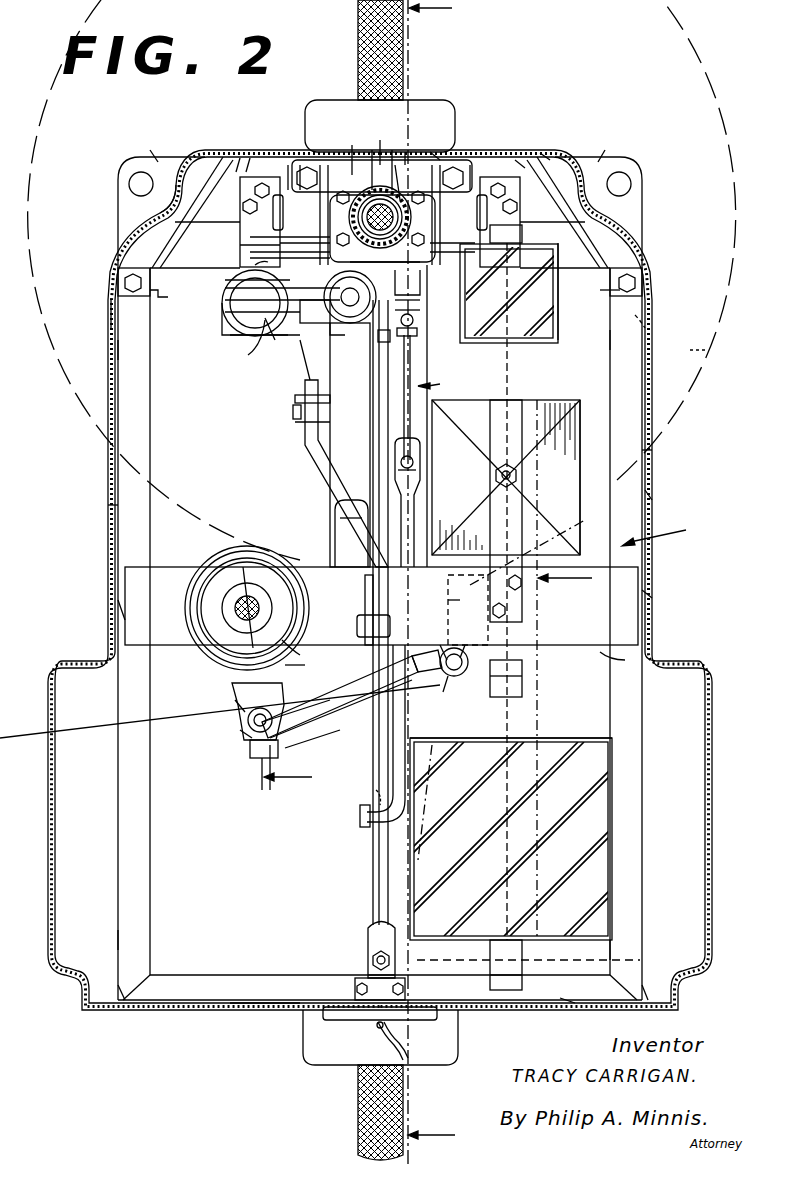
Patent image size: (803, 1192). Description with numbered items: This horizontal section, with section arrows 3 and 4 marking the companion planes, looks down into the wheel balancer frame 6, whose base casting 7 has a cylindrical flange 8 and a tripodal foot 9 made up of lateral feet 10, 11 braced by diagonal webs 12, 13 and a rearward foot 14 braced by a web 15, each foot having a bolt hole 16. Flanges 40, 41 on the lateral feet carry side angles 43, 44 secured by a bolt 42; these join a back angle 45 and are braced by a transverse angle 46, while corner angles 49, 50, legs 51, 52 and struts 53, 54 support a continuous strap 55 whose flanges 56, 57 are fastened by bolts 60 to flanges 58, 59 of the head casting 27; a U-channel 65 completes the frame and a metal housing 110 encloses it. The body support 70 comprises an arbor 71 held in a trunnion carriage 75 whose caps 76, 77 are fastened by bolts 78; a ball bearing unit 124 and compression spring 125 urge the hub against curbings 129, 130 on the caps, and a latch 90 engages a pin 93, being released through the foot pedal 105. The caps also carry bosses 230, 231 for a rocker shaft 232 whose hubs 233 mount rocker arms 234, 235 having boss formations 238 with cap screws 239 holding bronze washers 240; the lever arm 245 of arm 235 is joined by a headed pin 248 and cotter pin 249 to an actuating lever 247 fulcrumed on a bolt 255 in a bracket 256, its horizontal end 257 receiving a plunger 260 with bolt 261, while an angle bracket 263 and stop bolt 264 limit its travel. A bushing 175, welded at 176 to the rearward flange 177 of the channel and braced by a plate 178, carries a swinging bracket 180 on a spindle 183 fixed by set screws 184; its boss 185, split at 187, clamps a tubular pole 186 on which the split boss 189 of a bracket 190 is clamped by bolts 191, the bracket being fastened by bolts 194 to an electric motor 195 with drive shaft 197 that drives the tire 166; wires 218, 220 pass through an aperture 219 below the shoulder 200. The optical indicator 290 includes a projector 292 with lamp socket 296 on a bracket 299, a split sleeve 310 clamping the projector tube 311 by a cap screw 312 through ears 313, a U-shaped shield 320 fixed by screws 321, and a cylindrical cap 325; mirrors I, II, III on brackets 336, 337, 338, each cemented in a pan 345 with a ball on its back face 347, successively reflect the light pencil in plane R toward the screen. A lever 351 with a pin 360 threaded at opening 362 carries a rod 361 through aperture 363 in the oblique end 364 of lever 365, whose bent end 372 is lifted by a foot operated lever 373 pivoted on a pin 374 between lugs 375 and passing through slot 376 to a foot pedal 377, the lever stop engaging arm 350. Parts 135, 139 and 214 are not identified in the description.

The section line 3 is at (508, 857).
The section line 4 is at (365, 395).
The frame 6 is at (661, 531).
The base casting 7 is at (172, 170).
The cylindrical flange 8 is at (406, 160).
The tripodal foot 9 is at (375, 263).
The foot 10 is at (520, 162).
The foot 11 is at (249, 160).
The diagonal web 12 is at (546, 158).
The diagonal web 13 is at (238, 160).
The foot 14 is at (335, 433).
The diagonal web 15 is at (373, 426).
The hole 16 is at (140, 188).
The head casting 27 is at (445, 162).
The rearwardly extending flange 40 is at (607, 290).
The rearwardly extending flange 41 is at (162, 294).
The bolt 42 is at (120, 280).
The angle 43 is at (628, 348).
The angle 44 is at (130, 348).
The back angle 45 is at (265, 1008).
The transverse angle 46 is at (530, 680).
The upstanding angle 49 is at (644, 988).
The upstanding angle 50 is at (122, 995).
The leg 51 is at (652, 604).
The leg 52 is at (123, 613).
The vertical strut 53 is at (652, 322).
The vertical strut 54 is at (108, 312).
The strap 55 is at (644, 465).
The flange 56 is at (480, 168).
The flange 57 is at (287, 166).
The laterally extending flange 58 is at (466, 170).
The laterally extending flange 59 is at (300, 165).
The bolts 60 is at (307, 168).
The transverse U-channel 65 is at (381, 606).
The adjustable body support 70 is at (428, 231).
The arbor 71 is at (366, 217).
The trunnion carriage 75 is at (419, 186).
The cap 76 is at (419, 186).
The cap 77 is at (347, 184).
The bolts 78 is at (334, 229).
The latch 90 is at (373, 362).
The pin 93 is at (391, 339).
The foot pedal 105 is at (360, 18).
The housing 110 is at (650, 500).
The ball bearing unit 124 is at (379, 170).
The compression spring 125 is at (398, 170).
The curbing 129 is at (381, 160).
The curbing 130 is at (353, 160).
The support post 135 is at (336, 215).
The support post 139 is at (439, 215).
The tire 166 is at (705, 352).
The bushing 175 is at (462, 652).
The weld 176 is at (443, 652).
The rearward flange 177 is at (620, 656).
The brace plate 178 is at (448, 600).
The swinging bracket 180 is at (366, 700).
The spindle 183 is at (454, 662).
The set screws 184 is at (443, 680).
The vertical boss 185 is at (240, 708).
The tubular pole 186 is at (246, 727).
The split 187 is at (248, 721).
The split boss 189 is at (290, 742).
The bracket 190 is at (255, 740).
The bolts 191 is at (300, 713).
The bolts 194 is at (258, 708).
The electric motor 195 is at (247, 608).
The drive shaft 197 is at (236, 605).
The shoulder 200 is at (262, 752).
The spring 214 is at (365, 1028).
The wire 218 is at (296, 650).
The aperture 219 is at (290, 700).
The wire 220 is at (309, 663).
The boss 230 is at (424, 282).
The boss 231 is at (305, 237).
The rocker shaft 232 is at (385, 255).
The hub portion 233 is at (300, 250).
The rocker arm 234 is at (458, 238).
The rocker arm 235 is at (290, 236).
The boss formation 238 is at (273, 222).
The cap screw 239 is at (478, 222).
The bronze washer 240 is at (273, 210).
The lever arm 245 is at (302, 350).
The actuating lever 247 is at (305, 438).
The headed pin 248 is at (281, 411).
The cotter pin 249 is at (295, 422).
The bolt 255 is at (390, 626).
The upstanding bracket 256 is at (367, 597).
The end 257 is at (372, 938).
The plunger 260 is at (373, 962).
The bolt 261 is at (368, 975).
The angle bracket 263 is at (340, 542).
The stop bolt 264 is at (340, 520).
The optical indicator 290 is at (258, 330).
The projector 292 is at (350, 305).
The socket 296 is at (296, 398).
The bracket 299 is at (246, 242).
The split sleeve 310 is at (232, 333).
The projector tube 311 is at (282, 293).
The cap screw 312 is at (228, 283).
The lateral ears 313 is at (226, 305).
The U-shaped shield 320 is at (222, 312).
The screws 321 is at (256, 264).
The cylindrical cap 325 is at (368, 335).
The bracket 336 is at (506, 234).
The bracket 337 is at (506, 511).
The bracket 338 is at (506, 965).
The supporting pan 345 is at (560, 328).
The back face 347 is at (507, 459).
The arm 350 is at (421, 301).
The lever 351 is at (421, 311).
The pin 360 is at (414, 324).
The rod 361 is at (411, 368).
The opening 362 is at (418, 334).
The aperture 363 is at (414, 464).
The oblique end 364 is at (416, 475).
The lever 365 is at (416, 505).
The rearward end 372 is at (362, 816).
The foot operated lever 373 is at (376, 792).
The pin 374 is at (355, 990).
The lugs 375 is at (385, 985).
The slot 376 is at (410, 994).
The foot pedal 377 is at (360, 1098).
The mirror I is at (548, 277).
The mirror II is at (566, 460).
The mirror III is at (514, 837).
The plane R is at (505, 576).